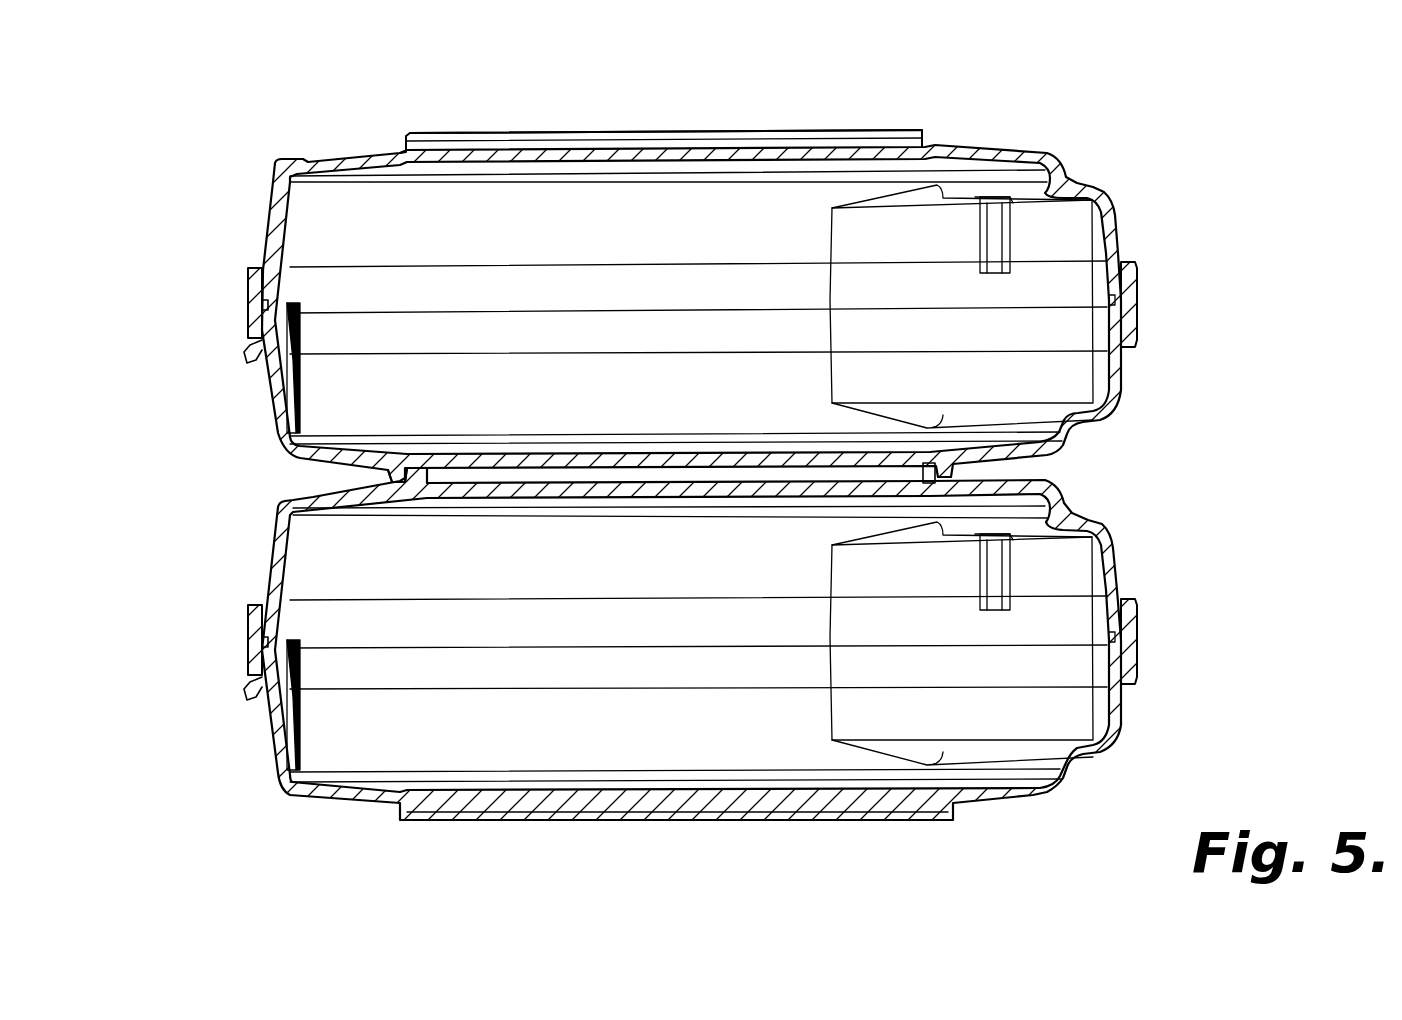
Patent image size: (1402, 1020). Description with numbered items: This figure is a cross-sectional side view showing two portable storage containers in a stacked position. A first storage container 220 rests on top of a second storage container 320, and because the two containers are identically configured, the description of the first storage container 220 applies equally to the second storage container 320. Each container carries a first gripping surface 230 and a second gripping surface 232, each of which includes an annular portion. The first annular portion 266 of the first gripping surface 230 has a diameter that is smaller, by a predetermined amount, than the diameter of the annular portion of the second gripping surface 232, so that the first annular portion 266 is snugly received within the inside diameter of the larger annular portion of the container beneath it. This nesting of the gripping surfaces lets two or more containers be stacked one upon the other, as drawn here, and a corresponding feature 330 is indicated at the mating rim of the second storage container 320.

The first storage container 220 is at (606, 277).
The first gripping surface 230 is at (643, 98).
The first annular portion 266 is at (787, 128).
The second gripping surface 232 is at (388, 474).
The top rim tab 330 is at (950, 470).
The second storage container 320 is at (741, 641).